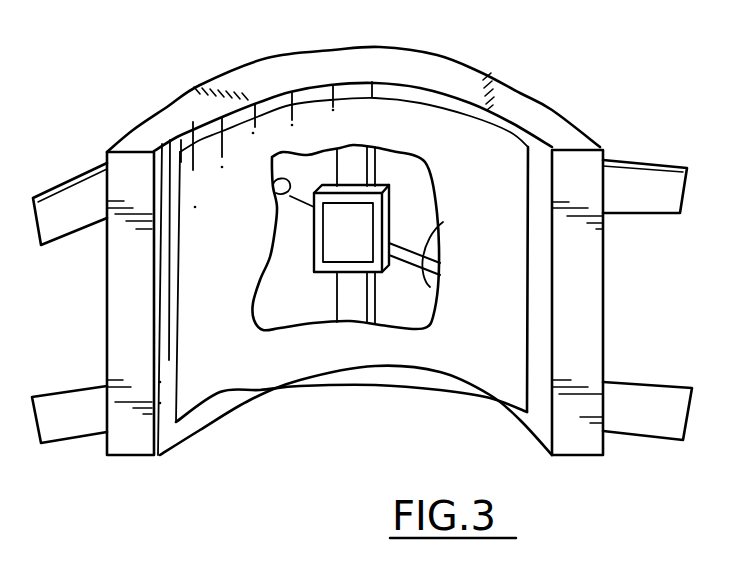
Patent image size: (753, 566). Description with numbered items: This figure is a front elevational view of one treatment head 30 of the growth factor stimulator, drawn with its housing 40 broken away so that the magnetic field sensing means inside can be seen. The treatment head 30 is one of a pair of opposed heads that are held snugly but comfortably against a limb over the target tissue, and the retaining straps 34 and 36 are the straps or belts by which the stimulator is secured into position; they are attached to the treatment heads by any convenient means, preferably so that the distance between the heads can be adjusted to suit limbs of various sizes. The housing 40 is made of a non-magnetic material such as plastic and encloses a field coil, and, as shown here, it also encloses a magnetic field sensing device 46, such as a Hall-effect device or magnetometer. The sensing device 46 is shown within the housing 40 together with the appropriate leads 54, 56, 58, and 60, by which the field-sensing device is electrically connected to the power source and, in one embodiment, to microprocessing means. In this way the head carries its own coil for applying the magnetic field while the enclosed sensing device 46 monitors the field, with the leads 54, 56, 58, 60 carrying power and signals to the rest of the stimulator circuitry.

The treatment head 30 is at (267, 54).
The retaining strap 34 is at (62, 184).
The retaining strap 36 is at (62, 400).
The housing 40 is at (117, 282).
The magnetic field sensing device 46 is at (393, 188).
The lead 54 is at (288, 197).
The lead 56 is at (273, 185).
The lead 58 is at (430, 287).
The lead 60 is at (453, 217).